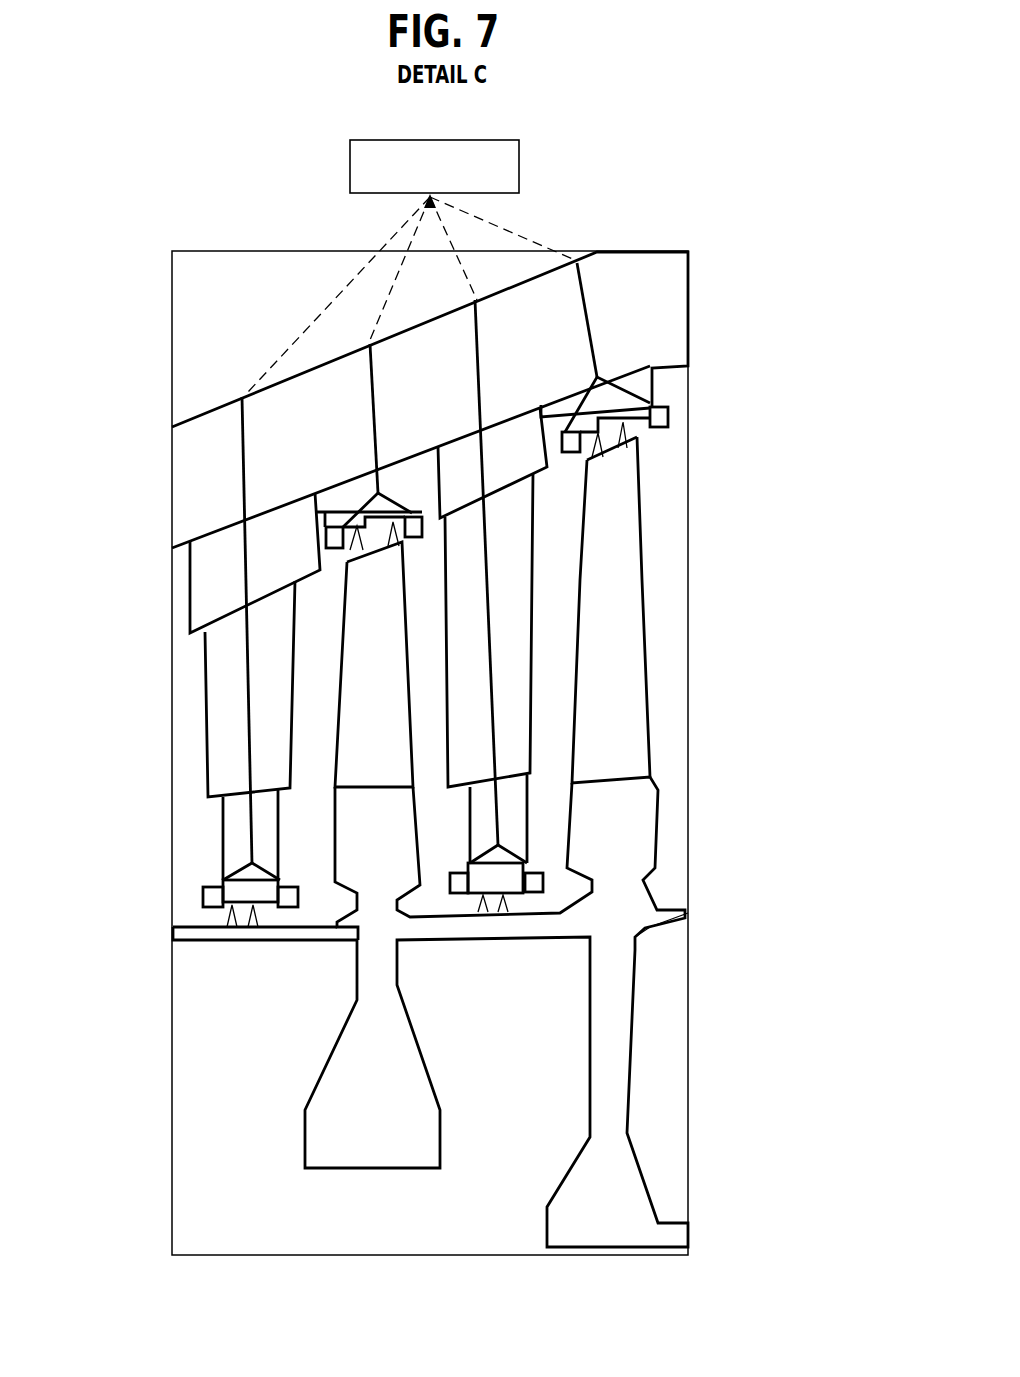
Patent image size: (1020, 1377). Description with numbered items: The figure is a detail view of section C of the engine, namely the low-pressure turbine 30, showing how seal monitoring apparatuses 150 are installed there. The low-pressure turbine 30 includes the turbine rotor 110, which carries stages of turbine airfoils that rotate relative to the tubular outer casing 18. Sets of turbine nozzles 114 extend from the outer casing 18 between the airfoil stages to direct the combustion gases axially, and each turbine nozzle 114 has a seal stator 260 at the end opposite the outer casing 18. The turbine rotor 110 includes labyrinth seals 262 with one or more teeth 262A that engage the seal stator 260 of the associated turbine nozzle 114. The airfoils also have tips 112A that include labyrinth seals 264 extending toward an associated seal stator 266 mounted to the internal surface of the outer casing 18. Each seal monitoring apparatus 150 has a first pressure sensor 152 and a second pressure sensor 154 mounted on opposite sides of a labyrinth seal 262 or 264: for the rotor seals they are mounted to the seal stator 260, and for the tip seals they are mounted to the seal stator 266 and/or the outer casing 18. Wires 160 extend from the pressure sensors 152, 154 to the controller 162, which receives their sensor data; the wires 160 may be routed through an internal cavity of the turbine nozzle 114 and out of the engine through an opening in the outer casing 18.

The tubular outer casing 18 is at (651, 318).
The low-pressure turbine 30 is at (150, 520).
The turbine rotor 110 is at (620, 1015).
The tips 112A is at (603, 490).
The turbine nozzles 114 is at (205, 687).
The seal monitoring apparatus 150 is at (410, 478).
The first pressure sensor 152 is at (333, 560).
The second pressure sensor 154 is at (670, 422).
The wires 160 is at (291, 434).
The controller 162 is at (520, 160).
The seal stator 260 is at (250, 880).
The labyrinth seals 262 is at (205, 927).
The teeth 262A is at (260, 932).
The labyrinth seals 264 is at (656, 452).
The seal stator 266 is at (617, 412).